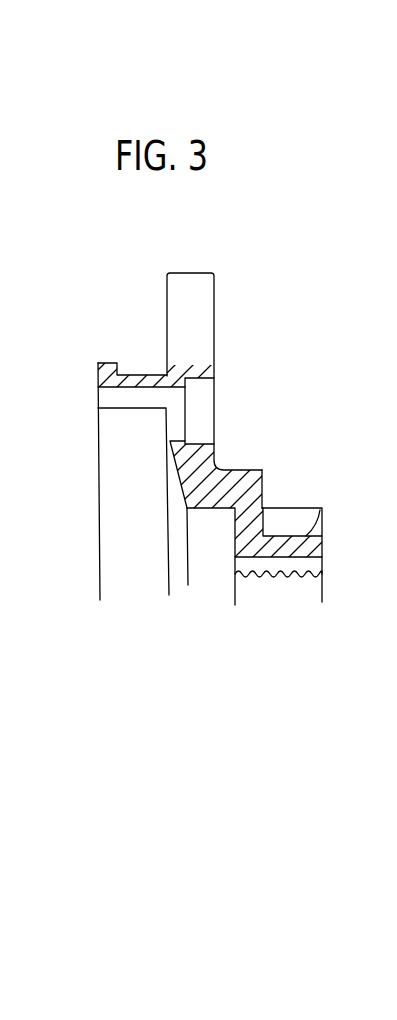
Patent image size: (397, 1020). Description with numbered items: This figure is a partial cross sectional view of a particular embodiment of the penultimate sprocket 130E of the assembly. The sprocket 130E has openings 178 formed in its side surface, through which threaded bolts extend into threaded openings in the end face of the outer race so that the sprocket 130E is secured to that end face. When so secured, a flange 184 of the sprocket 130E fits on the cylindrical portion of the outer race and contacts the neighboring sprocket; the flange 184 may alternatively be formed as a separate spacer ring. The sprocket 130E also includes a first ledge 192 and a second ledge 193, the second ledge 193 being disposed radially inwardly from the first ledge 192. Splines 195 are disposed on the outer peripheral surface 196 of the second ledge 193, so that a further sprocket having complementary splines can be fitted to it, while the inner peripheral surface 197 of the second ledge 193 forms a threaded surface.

The sprocket 130E is at (205, 273).
The flange 184 is at (152, 370).
The openings 178 is at (135, 400).
The first ledge 192 is at (242, 468).
The splines 195 is at (293, 507).
The outer peripheral surface 196 is at (322, 508).
The second ledge 193 is at (323, 546).
The inner peripheral surface 197 is at (291, 577).